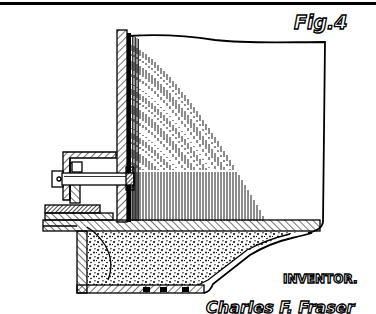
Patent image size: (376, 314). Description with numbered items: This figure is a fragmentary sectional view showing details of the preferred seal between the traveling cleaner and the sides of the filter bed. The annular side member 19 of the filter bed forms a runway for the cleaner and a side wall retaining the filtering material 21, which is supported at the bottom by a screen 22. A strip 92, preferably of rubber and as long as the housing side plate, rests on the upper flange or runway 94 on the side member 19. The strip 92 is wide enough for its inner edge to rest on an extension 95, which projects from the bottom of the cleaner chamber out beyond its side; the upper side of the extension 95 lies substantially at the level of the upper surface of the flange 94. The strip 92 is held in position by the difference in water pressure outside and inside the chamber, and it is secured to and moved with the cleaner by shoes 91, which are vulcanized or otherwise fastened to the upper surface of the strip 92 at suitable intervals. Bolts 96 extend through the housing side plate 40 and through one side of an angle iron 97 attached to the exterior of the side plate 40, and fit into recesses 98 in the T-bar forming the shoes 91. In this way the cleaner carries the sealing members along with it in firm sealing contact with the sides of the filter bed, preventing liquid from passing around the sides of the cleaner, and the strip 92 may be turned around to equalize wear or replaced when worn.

The housing side plate 40 is at (128, 47).
The bolts 96 is at (135, 176).
The angle iron 97 is at (73, 150).
The recesses 98 is at (63, 165).
The shoes 91 is at (52, 207).
The strip 92 is at (45, 214).
The upper flange or runway 94 is at (62, 230).
The annular side members 19 is at (78, 268).
The extensions 95 is at (108, 280).
The filtering material 21 is at (272, 252).
The screen 22 is at (218, 273).